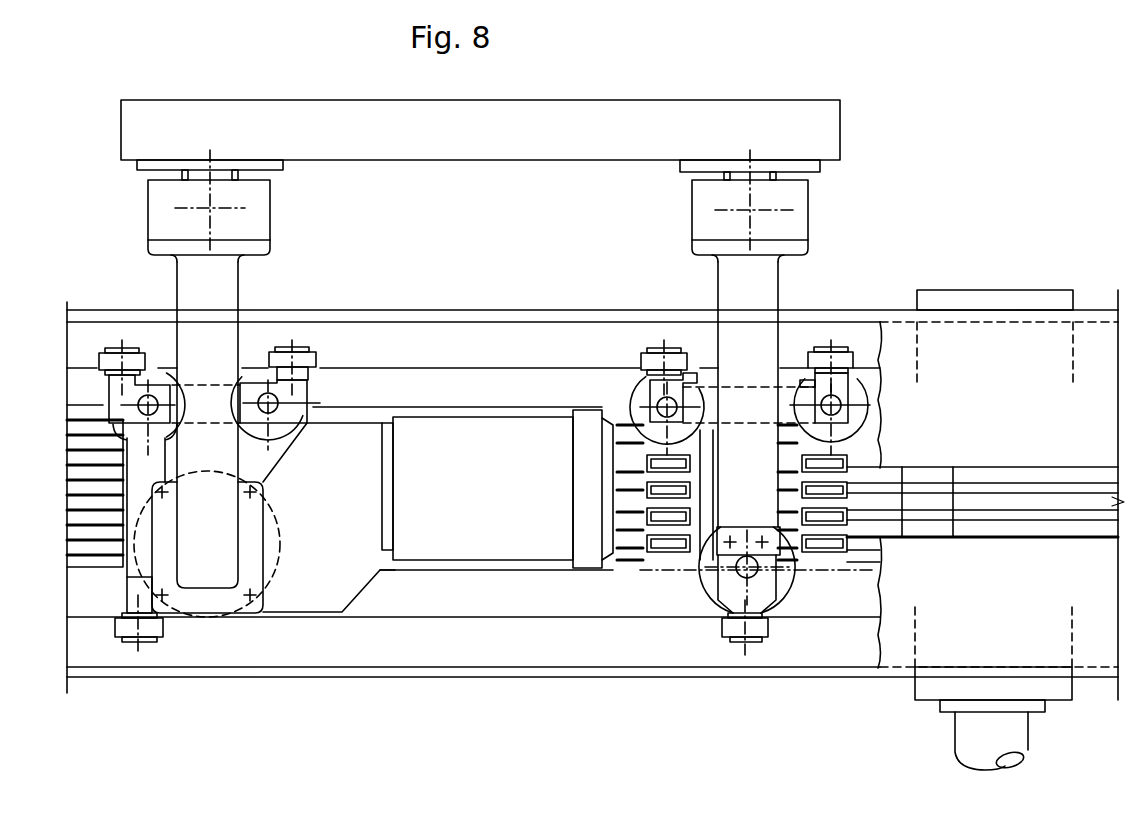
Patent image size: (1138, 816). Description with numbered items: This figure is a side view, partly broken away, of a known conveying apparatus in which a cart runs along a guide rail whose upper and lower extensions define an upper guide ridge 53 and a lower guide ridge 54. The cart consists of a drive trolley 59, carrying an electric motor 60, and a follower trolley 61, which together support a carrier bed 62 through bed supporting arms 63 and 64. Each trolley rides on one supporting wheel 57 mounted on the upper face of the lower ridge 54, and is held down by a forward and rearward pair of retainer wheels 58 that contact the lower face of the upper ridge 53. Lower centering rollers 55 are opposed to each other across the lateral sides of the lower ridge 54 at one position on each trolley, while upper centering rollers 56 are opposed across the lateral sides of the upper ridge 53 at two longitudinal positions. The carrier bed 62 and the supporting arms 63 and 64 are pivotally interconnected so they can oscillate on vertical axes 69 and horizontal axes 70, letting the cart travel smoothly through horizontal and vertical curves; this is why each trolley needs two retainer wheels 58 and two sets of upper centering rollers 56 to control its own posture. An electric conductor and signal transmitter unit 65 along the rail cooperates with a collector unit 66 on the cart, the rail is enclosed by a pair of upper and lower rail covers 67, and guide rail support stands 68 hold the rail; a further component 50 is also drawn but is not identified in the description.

The machine frame 50 is at (505, 682).
The guide ridge 53 is at (471, 322).
The guide ridge 54 is at (378, 643).
The lower centering rollers 55 is at (150, 640).
The upper centering rollers 56 is at (117, 352).
The supporting wheels 57 is at (280, 545).
The retainer wheels 58 is at (158, 375).
The drive trolley 59 is at (312, 392).
The electric motor 60 is at (492, 497).
The follower trolley 61 is at (801, 380).
The carrier bed 62 is at (521, 140).
The bed supporting arm 63 is at (218, 270).
The bed supporting arm 64 is at (704, 215).
The electric conductor and signal transmitter unit 65 is at (96, 568).
The collector unit 66 is at (659, 550).
The rail covers 67 is at (1090, 335).
The guide rail support stands 68 is at (960, 738).
The vertical axes 69 is at (210, 160).
The horizontal axes 70 is at (210, 207).